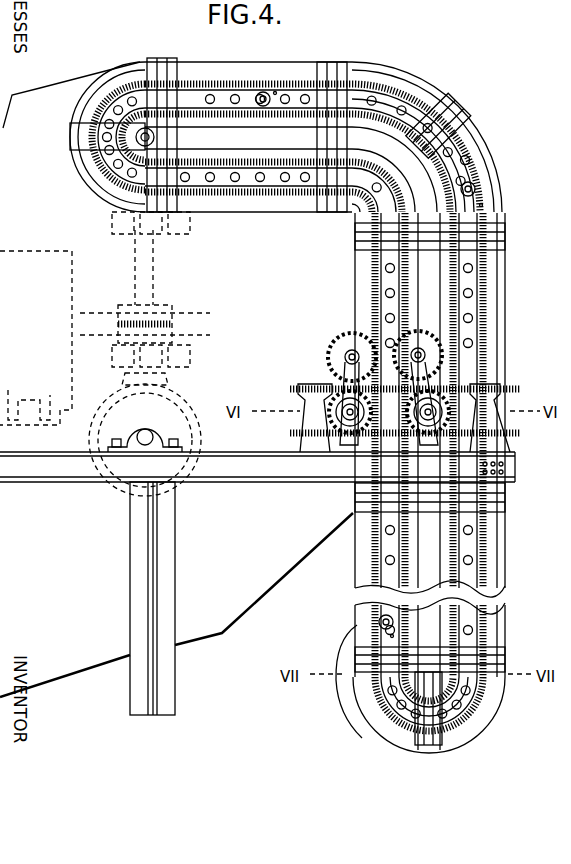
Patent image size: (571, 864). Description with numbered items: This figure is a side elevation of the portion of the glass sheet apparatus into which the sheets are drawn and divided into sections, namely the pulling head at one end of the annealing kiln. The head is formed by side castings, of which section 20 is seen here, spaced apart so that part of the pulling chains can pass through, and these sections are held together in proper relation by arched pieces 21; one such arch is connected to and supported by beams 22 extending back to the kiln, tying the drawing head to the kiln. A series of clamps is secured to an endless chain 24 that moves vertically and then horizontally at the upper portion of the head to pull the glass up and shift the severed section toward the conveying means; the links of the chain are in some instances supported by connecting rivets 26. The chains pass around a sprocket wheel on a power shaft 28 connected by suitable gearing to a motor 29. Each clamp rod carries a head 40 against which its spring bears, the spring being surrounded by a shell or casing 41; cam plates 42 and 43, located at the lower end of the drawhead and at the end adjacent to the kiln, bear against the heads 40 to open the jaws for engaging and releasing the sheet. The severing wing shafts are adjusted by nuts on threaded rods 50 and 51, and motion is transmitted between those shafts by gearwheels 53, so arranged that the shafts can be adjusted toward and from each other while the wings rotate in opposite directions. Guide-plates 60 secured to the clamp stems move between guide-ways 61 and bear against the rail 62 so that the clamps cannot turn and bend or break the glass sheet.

The side casting section 20 is at (420, 318).
The arched pieces 21 is at (164, 72).
The beams 22 is at (515, 468).
The endless chain 24 is at (224, 96).
The connecting rivets 26 is at (394, 104).
The power shaft 28 is at (156, 138).
The motor 29 is at (27, 258).
The head 40 is at (470, 162).
The shell or casing 41 is at (266, 92).
The cam plate 42 is at (478, 556).
The cam plate 43 is at (118, 165).
The threaded rod 50 is at (298, 388).
The threaded rod 51 is at (500, 436).
The gearwheels 53 is at (345, 352).
The guide-plates 60 is at (300, 98).
The guide-ways 61 is at (128, 88).
The rail 62 is at (252, 121).